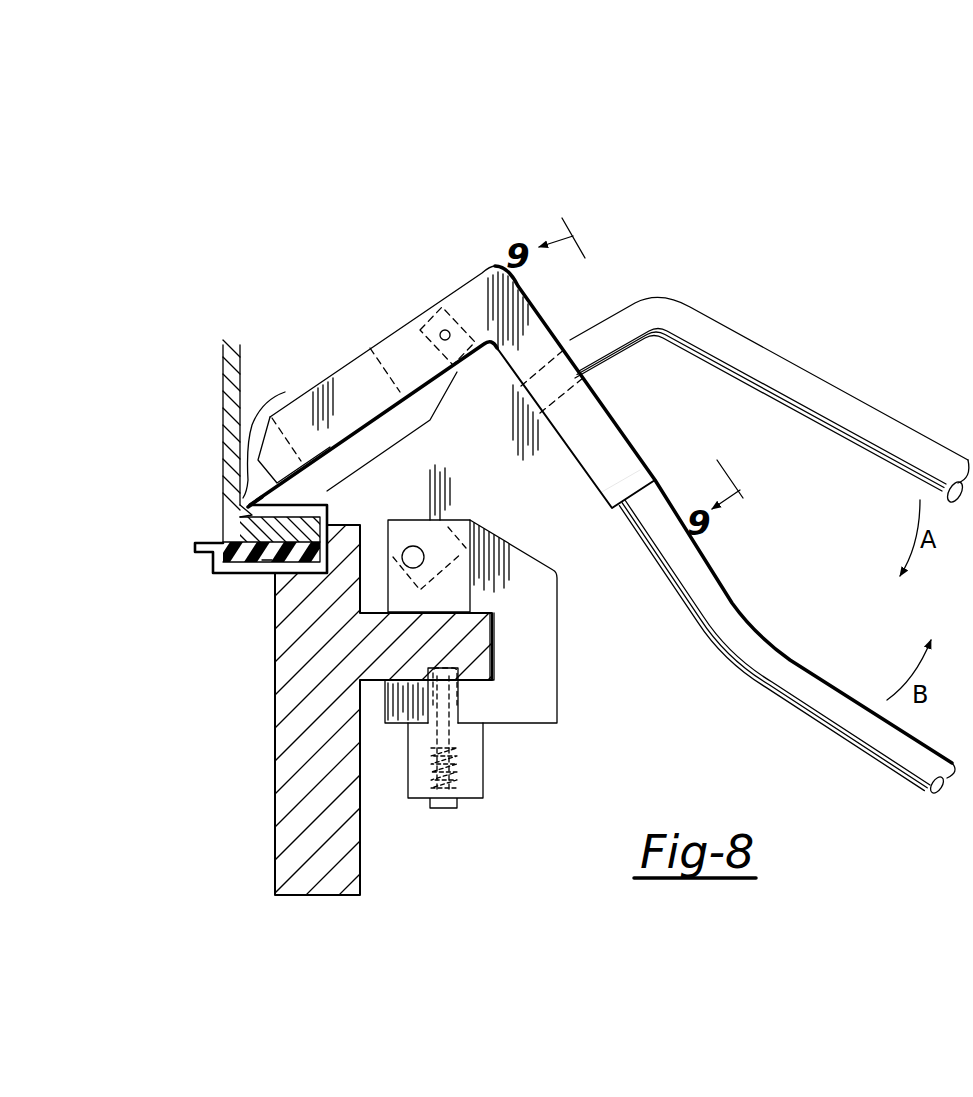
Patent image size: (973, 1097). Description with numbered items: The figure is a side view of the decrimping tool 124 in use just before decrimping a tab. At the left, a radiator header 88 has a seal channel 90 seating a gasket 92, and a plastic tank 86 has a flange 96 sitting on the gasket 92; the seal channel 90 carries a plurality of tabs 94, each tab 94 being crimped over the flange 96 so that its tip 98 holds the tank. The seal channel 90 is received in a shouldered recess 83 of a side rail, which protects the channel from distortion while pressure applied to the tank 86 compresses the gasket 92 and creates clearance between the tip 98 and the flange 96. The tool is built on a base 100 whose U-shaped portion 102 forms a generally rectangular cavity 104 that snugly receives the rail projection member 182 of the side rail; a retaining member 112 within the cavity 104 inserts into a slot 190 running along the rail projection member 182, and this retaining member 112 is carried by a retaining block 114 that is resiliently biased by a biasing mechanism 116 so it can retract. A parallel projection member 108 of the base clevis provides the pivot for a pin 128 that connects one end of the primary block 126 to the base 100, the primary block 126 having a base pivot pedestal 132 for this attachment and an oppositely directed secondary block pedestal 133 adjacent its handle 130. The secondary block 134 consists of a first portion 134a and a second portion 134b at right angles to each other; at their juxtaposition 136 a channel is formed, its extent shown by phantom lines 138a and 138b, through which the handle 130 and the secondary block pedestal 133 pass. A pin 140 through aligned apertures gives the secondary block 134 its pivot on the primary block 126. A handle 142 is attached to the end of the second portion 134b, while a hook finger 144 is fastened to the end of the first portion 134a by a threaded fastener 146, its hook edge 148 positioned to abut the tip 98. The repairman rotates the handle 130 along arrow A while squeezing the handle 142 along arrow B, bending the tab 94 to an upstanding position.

The shouldered recess 83 is at (297, 582).
The plastic tank 86 is at (222, 380).
The radiator header 88 is at (212, 568).
The seal channel 90 is at (258, 563).
The gasket 92 is at (267, 565).
The tab 94 is at (392, 431).
The flange 96 is at (242, 530).
The tip 98 is at (283, 491).
The base 100 is at (503, 646).
The U-shaped portion 102 is at (560, 662).
The cavity 104 is at (480, 601).
The parallel projection member 108 is at (385, 566).
The retaining member 112 is at (470, 672).
The retaining block 114 is at (484, 757).
The biasing mechanism 116 is at (466, 778).
The decrimping tool 124 is at (605, 484).
The primary block 126 is at (508, 488).
The pin 128 is at (410, 560).
The handle 130 is at (838, 388).
The base pivot pedestal 132 is at (470, 537).
The secondary block pedestal 133 is at (432, 406).
The secondary block 134 is at (375, 345).
The first portion 134a is at (397, 335).
The second portion 134b is at (560, 333).
The juxtaposition 136 is at (497, 262).
The phantom line 138a is at (397, 390).
The phantom line 138b is at (576, 445).
The pin 140 is at (445, 330).
The handle 142 is at (806, 662).
The hook finger 144 is at (271, 432).
The threaded fastener 146 is at (340, 458).
The hook edge 148 is at (242, 512).
The rail projection member 182 is at (495, 668).
The slot 190 is at (433, 672).